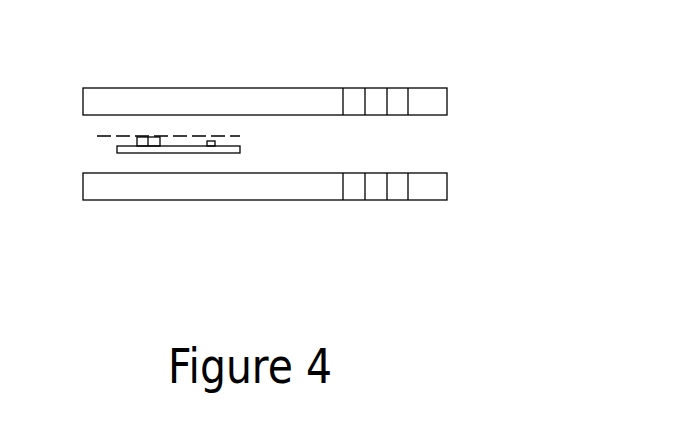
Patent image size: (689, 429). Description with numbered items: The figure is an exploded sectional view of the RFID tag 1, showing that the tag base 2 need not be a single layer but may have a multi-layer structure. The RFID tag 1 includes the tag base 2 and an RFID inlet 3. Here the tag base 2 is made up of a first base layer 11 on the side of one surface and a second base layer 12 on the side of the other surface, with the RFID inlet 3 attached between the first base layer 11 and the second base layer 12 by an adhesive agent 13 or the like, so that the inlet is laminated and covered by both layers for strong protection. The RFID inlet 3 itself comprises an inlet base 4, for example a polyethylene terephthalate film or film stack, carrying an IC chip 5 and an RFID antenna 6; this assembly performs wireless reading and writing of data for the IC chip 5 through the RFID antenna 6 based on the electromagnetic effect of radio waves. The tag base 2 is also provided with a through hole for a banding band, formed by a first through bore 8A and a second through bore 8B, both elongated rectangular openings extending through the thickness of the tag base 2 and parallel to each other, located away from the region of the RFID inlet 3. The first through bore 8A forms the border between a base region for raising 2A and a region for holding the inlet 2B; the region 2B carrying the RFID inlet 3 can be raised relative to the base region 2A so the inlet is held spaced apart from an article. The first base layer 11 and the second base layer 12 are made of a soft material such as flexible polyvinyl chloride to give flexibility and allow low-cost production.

The RFID tag 1 is at (457, 80).
The tag base 2 is at (462, 182).
The base region for raising 2A is at (419, 106).
The region for holding the inlet 2B is at (277, 85).
The RFID inlet 3 is at (175, 90).
The inlet base 4 is at (182, 150).
The IC chip 5 is at (148, 142).
The RFID antenna 6 is at (213, 143).
The first through bore 8A is at (348, 177).
The second through bore 8B is at (397, 177).
The first base layer 11 is at (83, 96).
The second base layer 12 is at (83, 184).
The adhesive agent 13 is at (97, 136).